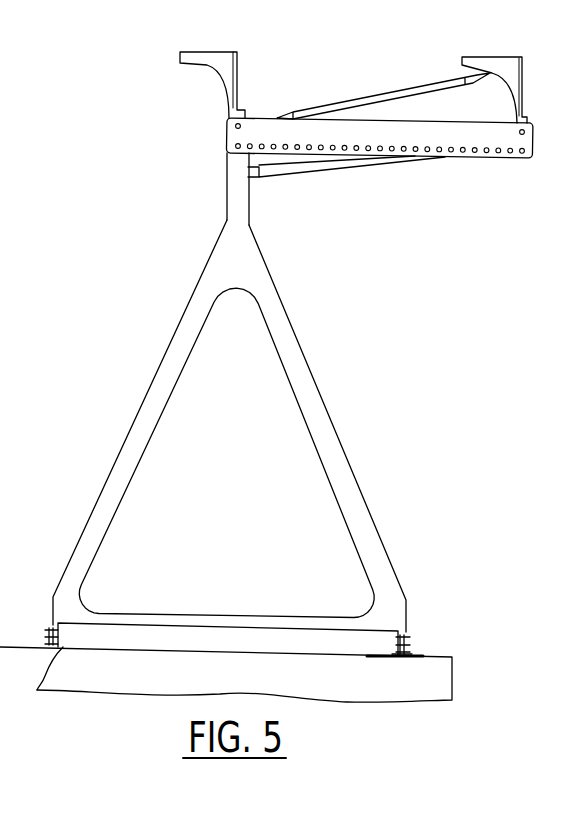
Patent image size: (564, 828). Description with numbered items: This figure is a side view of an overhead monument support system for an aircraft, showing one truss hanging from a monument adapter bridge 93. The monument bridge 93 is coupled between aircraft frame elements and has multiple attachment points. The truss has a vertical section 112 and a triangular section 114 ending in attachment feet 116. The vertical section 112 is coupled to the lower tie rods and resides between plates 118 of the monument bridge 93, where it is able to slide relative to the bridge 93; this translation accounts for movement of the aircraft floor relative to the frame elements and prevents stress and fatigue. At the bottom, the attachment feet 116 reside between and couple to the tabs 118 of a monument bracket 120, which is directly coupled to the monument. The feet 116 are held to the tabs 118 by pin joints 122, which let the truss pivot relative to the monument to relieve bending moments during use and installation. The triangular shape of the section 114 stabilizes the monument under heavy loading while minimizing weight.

The monument adapter bridge 93 is at (512, 160).
The vertical section 112 is at (243, 190).
The triangular section 114 is at (313, 373).
The attachment feet 116 is at (58, 630).
The plates 118 is at (37, 690).
The monument bracket 120 is at (75, 650).
The pin joint 122 is at (396, 645).